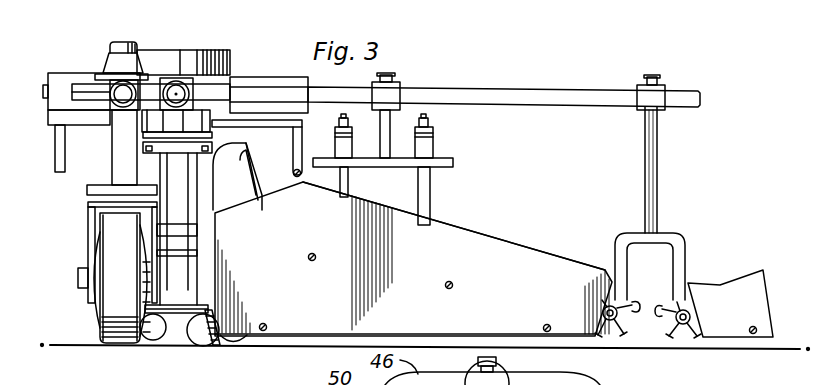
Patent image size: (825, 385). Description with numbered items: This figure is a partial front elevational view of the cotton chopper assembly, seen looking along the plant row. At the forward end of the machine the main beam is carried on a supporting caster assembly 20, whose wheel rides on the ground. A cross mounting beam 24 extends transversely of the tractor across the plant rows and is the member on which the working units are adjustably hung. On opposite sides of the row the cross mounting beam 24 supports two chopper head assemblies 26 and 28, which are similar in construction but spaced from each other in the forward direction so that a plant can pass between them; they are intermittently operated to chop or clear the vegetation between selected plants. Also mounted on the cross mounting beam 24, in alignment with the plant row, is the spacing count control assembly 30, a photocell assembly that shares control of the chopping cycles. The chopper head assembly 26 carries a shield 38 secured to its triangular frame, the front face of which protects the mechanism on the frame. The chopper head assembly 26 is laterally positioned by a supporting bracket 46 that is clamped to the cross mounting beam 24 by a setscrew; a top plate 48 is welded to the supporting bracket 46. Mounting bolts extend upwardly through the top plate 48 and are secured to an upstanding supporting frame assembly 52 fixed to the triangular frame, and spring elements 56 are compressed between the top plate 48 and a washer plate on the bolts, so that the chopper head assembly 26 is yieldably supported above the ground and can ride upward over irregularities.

The supporting caster assembly 20 is at (93, 327).
The cross mounting beam 24 is at (478, 93).
The chopper head assembly 26 is at (530, 237).
The chopper head assembly 28 is at (740, 266).
The spacing count control assembly 30 is at (682, 228).
The shield 38 is at (455, 265).
The supporting bracket 46 is at (393, 125).
The top plate 48 is at (453, 158).
The upstanding supporting frame assembly 52 is at (430, 193).
The spring elements 56 is at (427, 148).